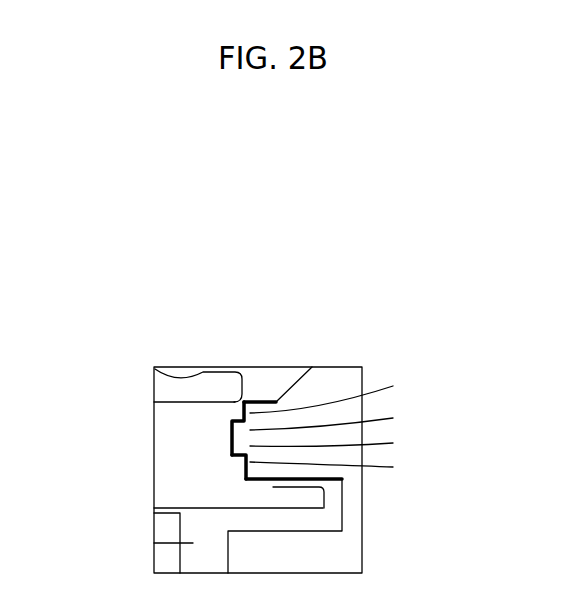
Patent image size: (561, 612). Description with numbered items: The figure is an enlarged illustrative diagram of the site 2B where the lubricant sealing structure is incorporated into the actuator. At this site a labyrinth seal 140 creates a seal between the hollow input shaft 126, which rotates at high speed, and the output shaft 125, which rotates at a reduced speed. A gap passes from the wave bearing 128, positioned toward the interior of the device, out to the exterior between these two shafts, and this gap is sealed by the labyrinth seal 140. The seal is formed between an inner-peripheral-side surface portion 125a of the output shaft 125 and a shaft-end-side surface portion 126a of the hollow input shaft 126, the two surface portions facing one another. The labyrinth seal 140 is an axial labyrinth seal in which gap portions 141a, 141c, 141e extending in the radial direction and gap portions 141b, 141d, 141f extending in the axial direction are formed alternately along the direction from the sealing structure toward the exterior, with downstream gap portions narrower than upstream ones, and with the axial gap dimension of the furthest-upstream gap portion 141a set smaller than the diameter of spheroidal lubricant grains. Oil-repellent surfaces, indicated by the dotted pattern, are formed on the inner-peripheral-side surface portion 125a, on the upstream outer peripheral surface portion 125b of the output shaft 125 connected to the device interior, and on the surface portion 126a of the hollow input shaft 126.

The site 2B is at (350, 357).
The output shaft 125 is at (317, 378).
The inner-peripheral-side surface portion 125a is at (231, 428).
The outer peripheral surface portion 125b is at (260, 401).
The hollow input shaft 126 is at (152, 457).
The shaft-end-side surface portion 126a is at (232, 456).
The wave bearing 128 is at (148, 381).
The labyrinth seal 140 is at (462, 373).
The gap portion 141a is at (351, 391).
The gap portion 141b is at (351, 417).
The gap portion 141c is at (350, 445).
The gap portion 141d is at (351, 467).
The gap portion 141e is at (265, 478).
The gap portion 141f is at (275, 488).